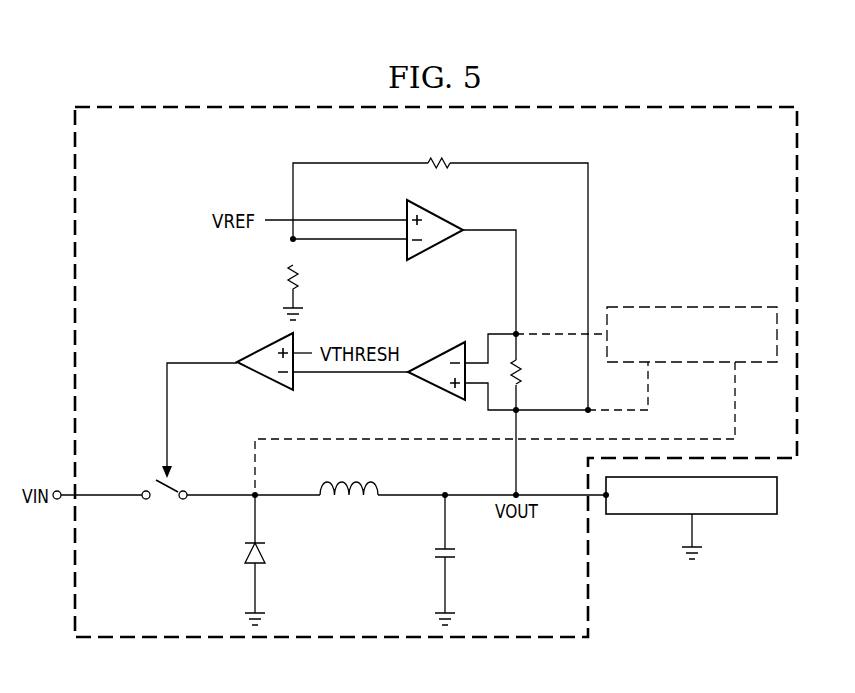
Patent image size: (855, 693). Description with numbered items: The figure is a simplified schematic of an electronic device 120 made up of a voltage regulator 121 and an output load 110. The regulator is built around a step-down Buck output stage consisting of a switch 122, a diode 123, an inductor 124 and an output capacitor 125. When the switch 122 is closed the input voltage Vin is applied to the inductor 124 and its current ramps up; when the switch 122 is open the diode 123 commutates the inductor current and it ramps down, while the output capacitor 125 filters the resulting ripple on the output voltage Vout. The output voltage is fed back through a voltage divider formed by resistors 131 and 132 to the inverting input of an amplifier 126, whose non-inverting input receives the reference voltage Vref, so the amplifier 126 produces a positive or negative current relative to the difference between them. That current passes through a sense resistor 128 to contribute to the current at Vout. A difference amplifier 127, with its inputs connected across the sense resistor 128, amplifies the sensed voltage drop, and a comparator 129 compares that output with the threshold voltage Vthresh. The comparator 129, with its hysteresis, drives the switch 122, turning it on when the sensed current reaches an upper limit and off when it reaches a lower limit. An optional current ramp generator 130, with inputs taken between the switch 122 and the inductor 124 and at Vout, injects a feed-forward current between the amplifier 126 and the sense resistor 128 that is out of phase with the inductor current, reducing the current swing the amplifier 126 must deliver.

The output load 110 is at (733, 515).
The electronic device 120 is at (321, 67).
The voltage regulator 121 is at (608, 103).
The switch 122 is at (160, 499).
The diode 123 is at (246, 561).
The inductor 124 is at (349, 497).
The output capacitor 125 is at (457, 554).
The amplifier 126 is at (432, 213).
The difference amplifier 127 is at (436, 387).
The sense resistor 128 is at (523, 373).
The comparator 129 is at (264, 377).
The current ramp generator 130 is at (702, 306).
The resistor 131 is at (441, 160).
The resistor 132 is at (288, 273).